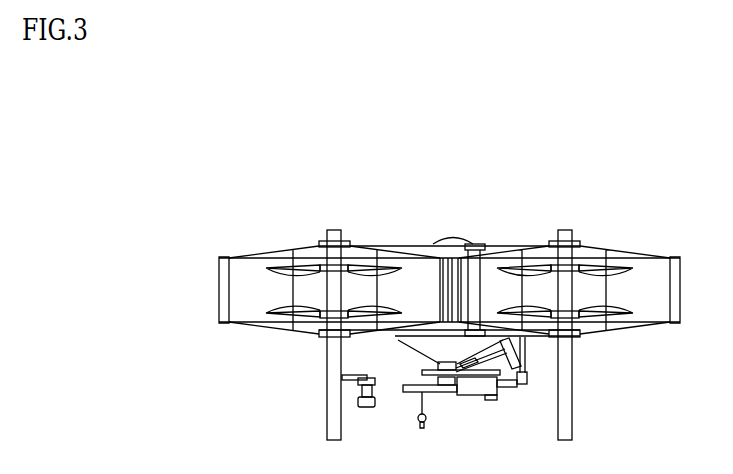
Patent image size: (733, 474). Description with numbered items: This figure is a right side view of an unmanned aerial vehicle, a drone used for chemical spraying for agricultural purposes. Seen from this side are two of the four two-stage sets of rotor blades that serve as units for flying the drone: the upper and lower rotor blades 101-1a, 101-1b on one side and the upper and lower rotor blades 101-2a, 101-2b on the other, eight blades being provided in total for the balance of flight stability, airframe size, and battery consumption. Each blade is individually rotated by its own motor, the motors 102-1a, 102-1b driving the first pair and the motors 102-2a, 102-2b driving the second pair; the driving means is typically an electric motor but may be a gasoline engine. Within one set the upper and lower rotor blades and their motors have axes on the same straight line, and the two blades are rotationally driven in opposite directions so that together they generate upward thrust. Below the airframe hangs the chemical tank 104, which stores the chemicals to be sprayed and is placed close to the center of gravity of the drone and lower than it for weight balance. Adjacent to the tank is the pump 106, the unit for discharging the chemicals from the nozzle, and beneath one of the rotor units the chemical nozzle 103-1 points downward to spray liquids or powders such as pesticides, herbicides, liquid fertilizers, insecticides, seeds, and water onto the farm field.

The rotor blade 101-1a is at (622, 253).
The rotor blade 101-1b is at (628, 322).
The rotor blade 101-2a is at (268, 252).
The rotor blade 101-2b is at (262, 325).
The motor 102-1a is at (549, 262).
The motor 102-1b is at (585, 308).
The motor 102-2a is at (352, 262).
The motor 102-2b is at (322, 309).
The chemical nozzle 103-1 is at (363, 410).
The chemical tank 104 is at (417, 362).
The pump 106 is at (472, 395).